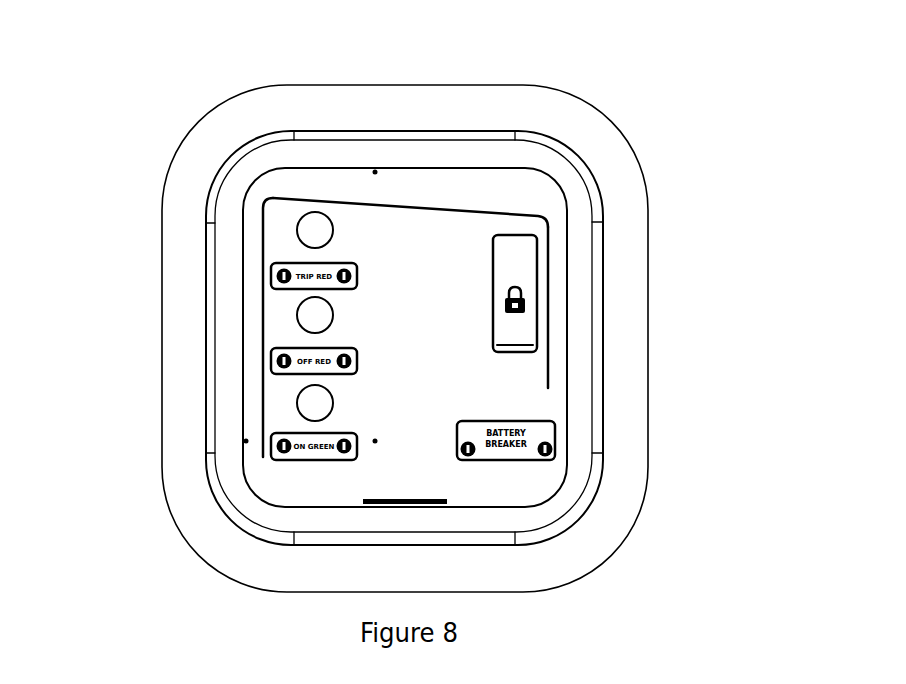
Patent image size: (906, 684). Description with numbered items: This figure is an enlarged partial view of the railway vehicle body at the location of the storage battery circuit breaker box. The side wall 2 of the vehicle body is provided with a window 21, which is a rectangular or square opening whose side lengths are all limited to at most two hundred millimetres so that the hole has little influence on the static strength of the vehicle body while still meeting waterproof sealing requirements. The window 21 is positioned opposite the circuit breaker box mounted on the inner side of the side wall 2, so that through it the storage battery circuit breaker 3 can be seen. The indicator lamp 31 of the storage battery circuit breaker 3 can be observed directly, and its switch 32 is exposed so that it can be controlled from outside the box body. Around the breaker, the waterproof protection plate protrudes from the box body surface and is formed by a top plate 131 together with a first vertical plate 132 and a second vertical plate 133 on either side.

The side wall 2 is at (493, 113).
The window 21 is at (548, 170).
The storage battery circuit breaker 3 is at (516, 262).
The indicator lamp 31 is at (320, 316).
The switch 32 is at (505, 292).
The top plate 131 is at (415, 207).
The first vertical plate 132 is at (265, 314).
The second vertical plate 133 is at (551, 297).